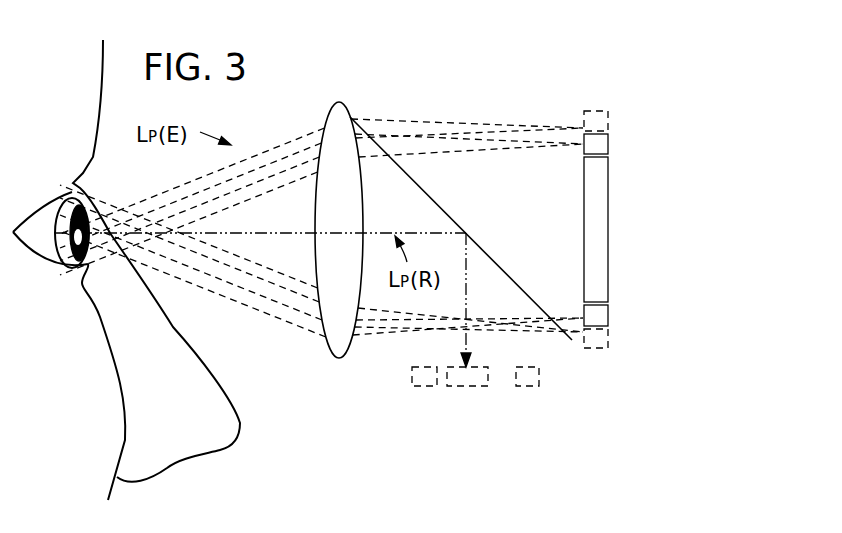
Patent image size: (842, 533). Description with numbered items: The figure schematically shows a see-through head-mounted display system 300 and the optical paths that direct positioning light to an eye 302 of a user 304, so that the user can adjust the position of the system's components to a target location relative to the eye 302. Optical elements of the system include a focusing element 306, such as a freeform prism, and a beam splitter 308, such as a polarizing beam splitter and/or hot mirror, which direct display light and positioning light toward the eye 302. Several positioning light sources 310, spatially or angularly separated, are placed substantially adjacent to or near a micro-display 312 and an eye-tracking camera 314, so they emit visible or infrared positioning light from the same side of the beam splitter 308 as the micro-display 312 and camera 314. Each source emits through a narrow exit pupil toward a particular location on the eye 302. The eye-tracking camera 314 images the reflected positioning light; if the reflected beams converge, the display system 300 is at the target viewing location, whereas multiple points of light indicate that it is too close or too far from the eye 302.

The see-through head-mounted display system 300 is at (491, 40).
The eye 302 is at (40, 242).
The user 304 is at (60, 88).
The focusing element 306 is at (339, 103).
The beam splitter 308 is at (431, 199).
The positioning light sources 310 is at (600, 111).
The micro-display 312 is at (660, 195).
The eye-tracking camera 314 is at (505, 425).